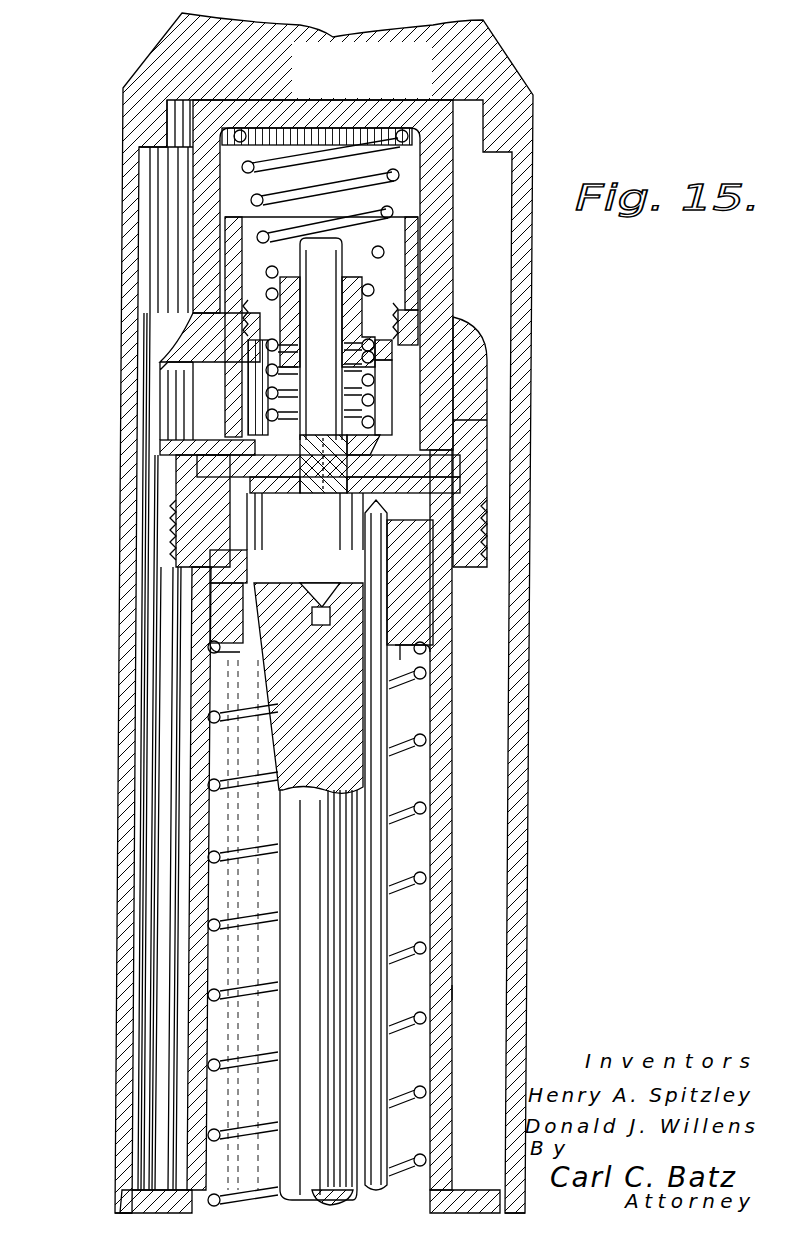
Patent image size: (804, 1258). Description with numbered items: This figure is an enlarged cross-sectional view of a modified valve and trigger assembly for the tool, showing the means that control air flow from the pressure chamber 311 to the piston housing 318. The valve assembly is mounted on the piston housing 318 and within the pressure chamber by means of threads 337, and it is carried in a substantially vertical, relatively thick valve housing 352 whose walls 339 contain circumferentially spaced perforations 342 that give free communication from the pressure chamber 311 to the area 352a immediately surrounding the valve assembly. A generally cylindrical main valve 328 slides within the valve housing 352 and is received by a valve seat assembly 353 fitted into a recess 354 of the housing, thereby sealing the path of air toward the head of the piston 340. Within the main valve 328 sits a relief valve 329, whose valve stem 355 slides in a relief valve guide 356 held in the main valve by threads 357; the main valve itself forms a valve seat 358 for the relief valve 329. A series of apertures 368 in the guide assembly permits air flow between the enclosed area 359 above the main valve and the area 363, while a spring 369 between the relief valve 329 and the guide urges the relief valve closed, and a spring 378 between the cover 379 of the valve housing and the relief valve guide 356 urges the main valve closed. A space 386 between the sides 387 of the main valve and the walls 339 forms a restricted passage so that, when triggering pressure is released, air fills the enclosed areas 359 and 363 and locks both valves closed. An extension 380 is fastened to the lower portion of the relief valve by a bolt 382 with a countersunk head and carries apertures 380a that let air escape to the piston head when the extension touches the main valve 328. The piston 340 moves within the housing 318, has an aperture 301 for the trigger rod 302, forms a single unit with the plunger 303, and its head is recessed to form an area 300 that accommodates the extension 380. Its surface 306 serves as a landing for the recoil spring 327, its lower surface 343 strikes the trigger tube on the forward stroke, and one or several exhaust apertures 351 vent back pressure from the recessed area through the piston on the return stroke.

The pressure chamber 311 is at (408, 77).
The cover 379 is at (413, 106).
The enclosed area 359 is at (400, 147).
The spring 378 is at (372, 162).
The space 386 is at (420, 221).
The walls 339 is at (385, 275).
The valve stem 355 is at (458, 297).
The valve housing 352 is at (430, 318).
The apertures 368 is at (405, 340).
The area 363 is at (392, 355).
The spring 369 is at (372, 380).
The main valve 328 is at (400, 398).
The area 352a is at (460, 420).
The recess 354 is at (440, 455).
The valve seat assembly 353 is at (372, 468).
The extension 380 is at (455, 480).
The threads 337 is at (480, 523).
The piston 340 is at (417, 613).
The surface 306 is at (440, 645).
The aperture 301 is at (387, 715).
The trigger rod 302 is at (378, 782).
The plunger 303 is at (345, 860).
The recoil spring 327 is at (402, 943).
The piston housing 318 is at (443, 992).
The sides 387 is at (225, 272).
The threads 357 is at (210, 300).
The relief valve guide 356 is at (190, 316).
The perforations 342 is at (165, 399).
The relief valve 329 is at (205, 440).
The valve seat 358 is at (215, 475).
The apertures 380a is at (172, 520).
The recessed area 300 is at (185, 572).
The exhaust apertures 351 is at (235, 620).
The surface 343 is at (210, 760).
The bolt 382 is at (298, 497).